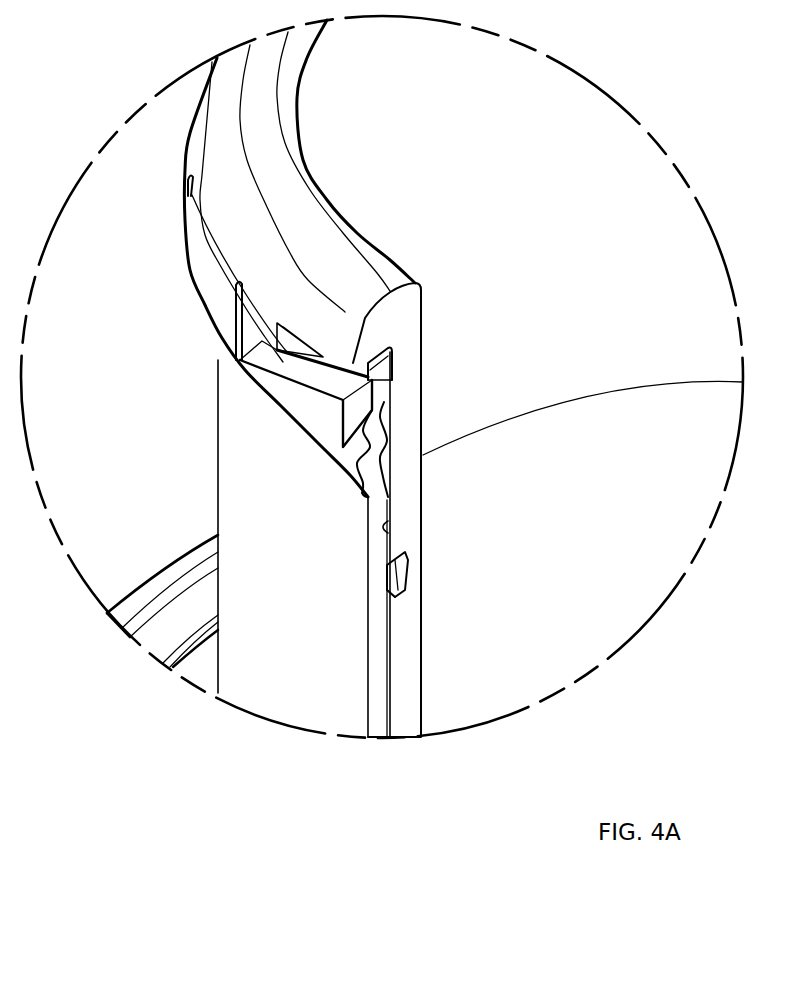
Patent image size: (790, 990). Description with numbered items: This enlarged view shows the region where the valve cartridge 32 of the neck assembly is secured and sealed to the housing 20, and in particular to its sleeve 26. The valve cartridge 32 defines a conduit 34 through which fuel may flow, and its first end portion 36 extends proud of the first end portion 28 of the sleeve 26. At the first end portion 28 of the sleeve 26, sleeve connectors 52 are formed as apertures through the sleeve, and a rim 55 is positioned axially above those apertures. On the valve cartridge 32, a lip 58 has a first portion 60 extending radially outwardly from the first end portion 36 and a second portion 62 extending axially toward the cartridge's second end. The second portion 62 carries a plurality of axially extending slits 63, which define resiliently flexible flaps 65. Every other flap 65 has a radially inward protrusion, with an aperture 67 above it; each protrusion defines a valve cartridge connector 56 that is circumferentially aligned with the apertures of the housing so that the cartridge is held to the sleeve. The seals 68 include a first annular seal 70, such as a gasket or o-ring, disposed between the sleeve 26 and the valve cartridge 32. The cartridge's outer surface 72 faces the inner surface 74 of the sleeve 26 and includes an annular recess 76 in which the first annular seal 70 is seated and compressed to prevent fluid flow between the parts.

The housing 20 is at (298, 687).
The sleeve 26 is at (240, 677).
The first end portion 28 is at (383, 443).
The valve cartridge 32 is at (408, 648).
The conduit 34 is at (574, 569).
The first end portion 36 is at (323, 129).
The sleeve connector 52 is at (393, 400).
The rim 55 is at (393, 367).
The valve cartridge connector 56 is at (372, 376).
The lip 58 is at (250, 160).
The first portion 60 is at (383, 322).
The second portion 62 is at (353, 420).
The slit 63 is at (233, 287).
The flap 65 is at (213, 295).
The aperture 67 is at (303, 345).
The seal 68 is at (405, 568).
The first annular seal 70 is at (396, 575).
The outer surface 72 is at (385, 527).
The inner surface 74 is at (390, 690).
The annular recess 76 is at (400, 593).